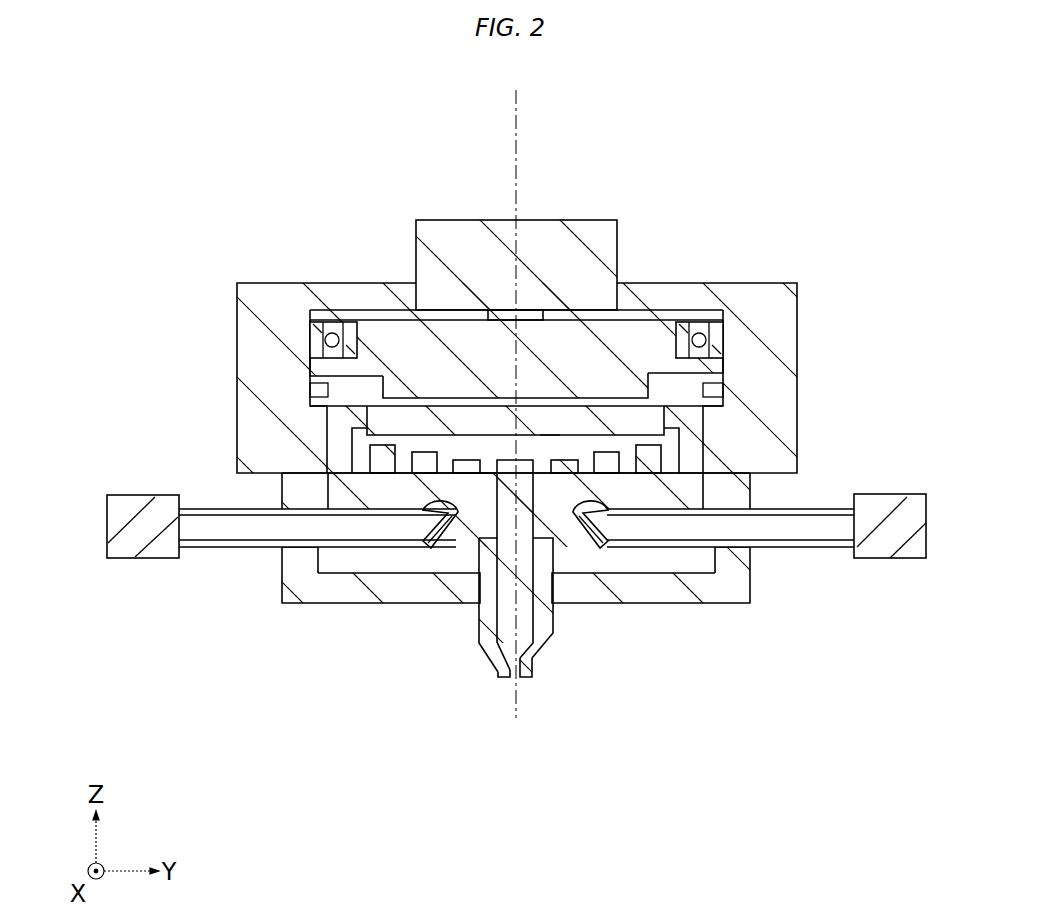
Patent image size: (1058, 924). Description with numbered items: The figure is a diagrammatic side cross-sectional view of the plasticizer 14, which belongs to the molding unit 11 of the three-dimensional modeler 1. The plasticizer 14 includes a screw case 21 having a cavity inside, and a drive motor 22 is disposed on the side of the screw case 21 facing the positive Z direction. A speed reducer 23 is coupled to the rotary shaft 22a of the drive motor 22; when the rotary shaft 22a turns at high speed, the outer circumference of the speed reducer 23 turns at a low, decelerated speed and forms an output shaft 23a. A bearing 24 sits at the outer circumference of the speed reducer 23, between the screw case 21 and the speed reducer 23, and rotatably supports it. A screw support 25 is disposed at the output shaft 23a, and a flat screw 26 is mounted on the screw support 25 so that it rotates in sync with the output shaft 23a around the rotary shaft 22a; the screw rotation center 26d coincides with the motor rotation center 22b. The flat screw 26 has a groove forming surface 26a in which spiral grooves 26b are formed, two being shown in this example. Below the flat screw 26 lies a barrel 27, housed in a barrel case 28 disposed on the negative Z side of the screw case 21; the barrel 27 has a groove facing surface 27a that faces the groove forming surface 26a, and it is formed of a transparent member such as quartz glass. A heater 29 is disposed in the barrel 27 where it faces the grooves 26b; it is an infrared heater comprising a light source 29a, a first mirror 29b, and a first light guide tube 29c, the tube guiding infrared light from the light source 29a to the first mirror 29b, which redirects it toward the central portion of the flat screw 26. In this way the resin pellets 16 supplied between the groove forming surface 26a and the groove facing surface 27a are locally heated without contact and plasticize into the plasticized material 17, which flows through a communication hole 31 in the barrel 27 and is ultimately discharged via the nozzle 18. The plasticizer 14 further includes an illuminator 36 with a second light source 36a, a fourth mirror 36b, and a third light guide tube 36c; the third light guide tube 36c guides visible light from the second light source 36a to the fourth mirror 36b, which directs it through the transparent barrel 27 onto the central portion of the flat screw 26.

The three-dimensional modeler 1 is at (841, 101).
The molding unit 11 is at (806, 101).
The plasticizer 14 is at (765, 101).
The resin pellets 16 is at (424, 474).
The plasticized material 17 is at (466, 474).
The nozzle 18 is at (540, 660).
The screw case 21 is at (248, 325).
The drive motor 22 is at (433, 220).
The rotary shaft 22a is at (555, 220).
The motor rotation center 22b is at (516, 94).
The speed reducer 23 is at (388, 327).
The output shaft 23a is at (423, 371).
The bearing 24 is at (348, 322).
The screw support 25 is at (422, 415).
The flat screw 26 is at (529, 462).
The groove forming surface 26a is at (633, 481).
The spiral groove 26b is at (382, 474).
The screw rotation center 26d is at (548, 433).
The barrel 27 is at (717, 555).
The groove facing surface 27a is at (490, 470).
The barrel case 28 is at (750, 580).
The heater 29 is at (287, 630).
The light source 29a is at (150, 560).
The first mirror 29b is at (440, 606).
The first light guide tube 29c is at (226, 549).
The communication hole 31 is at (527, 620).
The illuminator 36 is at (751, 630).
The second light source 36a is at (903, 560).
The fourth mirror 36b is at (648, 606).
The third light guide tube 36c is at (837, 549).